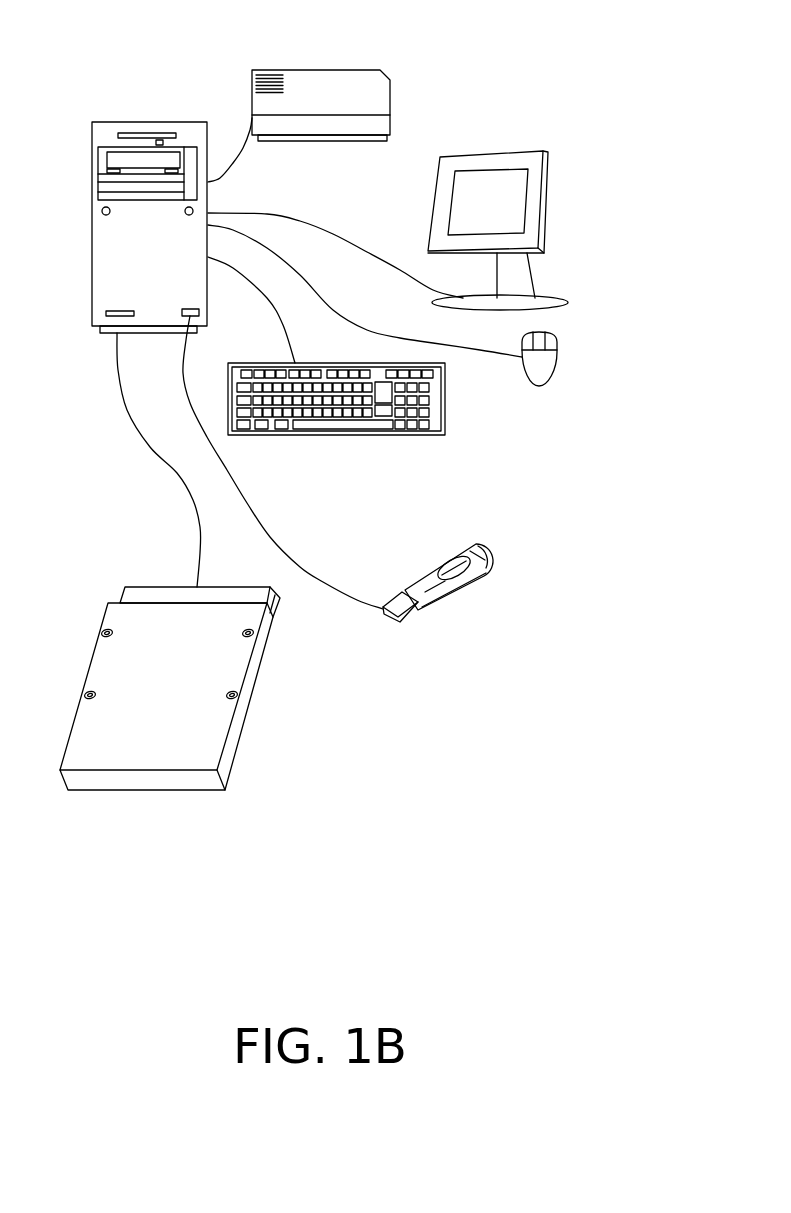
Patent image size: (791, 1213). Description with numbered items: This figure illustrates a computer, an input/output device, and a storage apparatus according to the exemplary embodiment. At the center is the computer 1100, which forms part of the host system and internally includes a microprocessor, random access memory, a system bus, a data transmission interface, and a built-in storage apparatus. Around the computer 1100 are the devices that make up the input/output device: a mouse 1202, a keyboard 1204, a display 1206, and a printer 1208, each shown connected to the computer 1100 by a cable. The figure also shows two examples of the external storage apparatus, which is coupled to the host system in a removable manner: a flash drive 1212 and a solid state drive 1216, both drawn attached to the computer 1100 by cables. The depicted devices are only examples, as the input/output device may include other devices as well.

The computer 1100 is at (149, 122).
The printer 1208 is at (317, 67).
The display 1206 is at (500, 150).
The mouse 1202 is at (558, 363).
The keyboard 1204 is at (447, 409).
The solid state drive 1216 is at (229, 571).
The flash drive 1212 is at (437, 565).